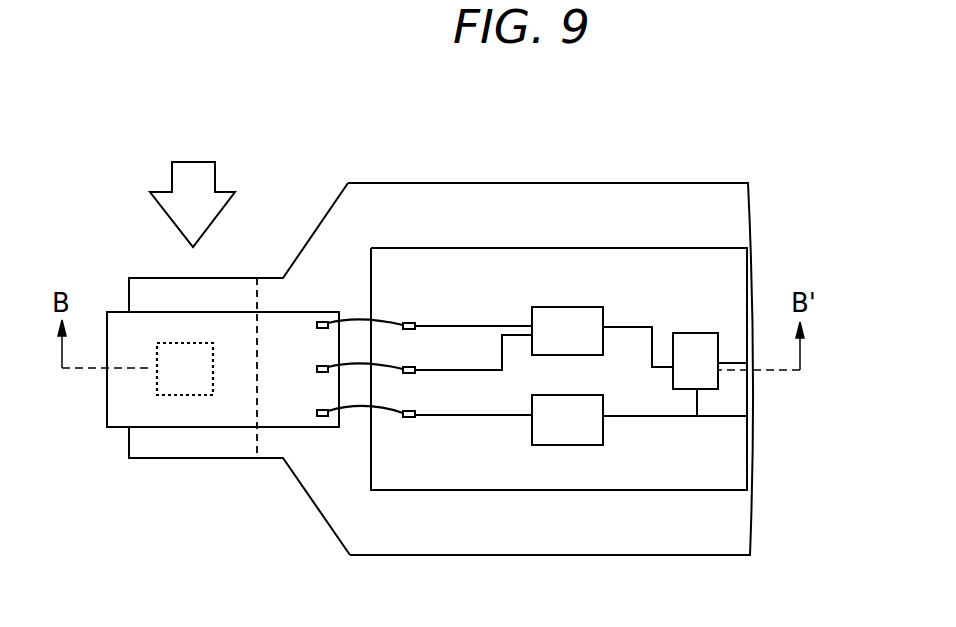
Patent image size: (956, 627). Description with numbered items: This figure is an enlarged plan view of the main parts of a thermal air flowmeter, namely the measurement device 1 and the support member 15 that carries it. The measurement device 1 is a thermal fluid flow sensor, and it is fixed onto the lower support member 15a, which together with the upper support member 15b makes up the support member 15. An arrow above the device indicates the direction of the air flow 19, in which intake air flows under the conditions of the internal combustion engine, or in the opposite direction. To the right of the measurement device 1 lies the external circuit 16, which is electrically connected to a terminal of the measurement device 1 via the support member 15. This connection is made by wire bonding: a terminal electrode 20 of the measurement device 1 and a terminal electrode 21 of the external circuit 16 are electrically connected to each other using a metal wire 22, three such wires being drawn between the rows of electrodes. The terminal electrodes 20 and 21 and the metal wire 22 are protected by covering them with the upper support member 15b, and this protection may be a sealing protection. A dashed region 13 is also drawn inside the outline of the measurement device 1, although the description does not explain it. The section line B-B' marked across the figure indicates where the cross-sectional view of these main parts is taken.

The measurement device 1 is at (122, 420).
The sensing element 13 is at (172, 395).
The support member 15 is at (310, 576).
The lower support member 15a is at (235, 458).
The upper support member 15b is at (253, 455).
The external circuit 16 is at (705, 490).
The air flow 19 is at (168, 213).
The terminal electrode 20 is at (322, 418).
The terminal electrode 21 is at (408, 418).
The metal wire 22 is at (358, 316).